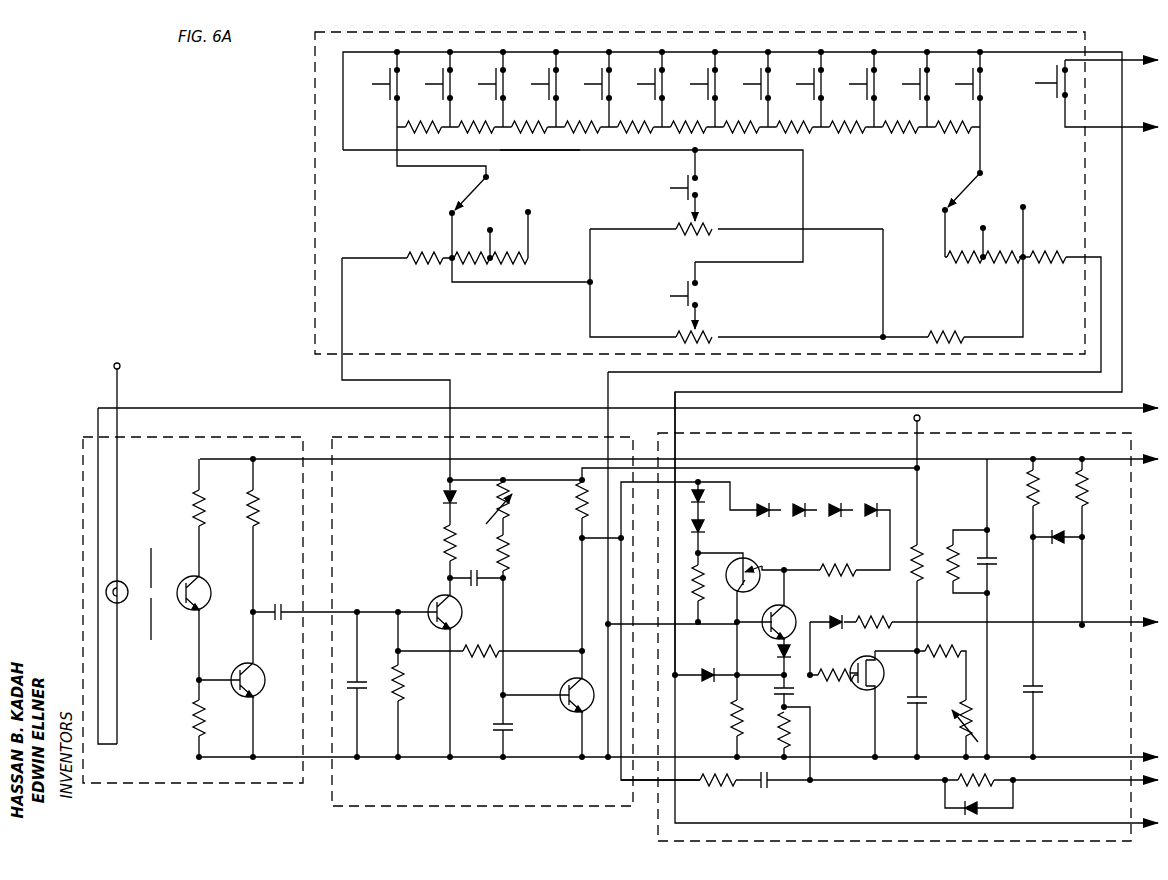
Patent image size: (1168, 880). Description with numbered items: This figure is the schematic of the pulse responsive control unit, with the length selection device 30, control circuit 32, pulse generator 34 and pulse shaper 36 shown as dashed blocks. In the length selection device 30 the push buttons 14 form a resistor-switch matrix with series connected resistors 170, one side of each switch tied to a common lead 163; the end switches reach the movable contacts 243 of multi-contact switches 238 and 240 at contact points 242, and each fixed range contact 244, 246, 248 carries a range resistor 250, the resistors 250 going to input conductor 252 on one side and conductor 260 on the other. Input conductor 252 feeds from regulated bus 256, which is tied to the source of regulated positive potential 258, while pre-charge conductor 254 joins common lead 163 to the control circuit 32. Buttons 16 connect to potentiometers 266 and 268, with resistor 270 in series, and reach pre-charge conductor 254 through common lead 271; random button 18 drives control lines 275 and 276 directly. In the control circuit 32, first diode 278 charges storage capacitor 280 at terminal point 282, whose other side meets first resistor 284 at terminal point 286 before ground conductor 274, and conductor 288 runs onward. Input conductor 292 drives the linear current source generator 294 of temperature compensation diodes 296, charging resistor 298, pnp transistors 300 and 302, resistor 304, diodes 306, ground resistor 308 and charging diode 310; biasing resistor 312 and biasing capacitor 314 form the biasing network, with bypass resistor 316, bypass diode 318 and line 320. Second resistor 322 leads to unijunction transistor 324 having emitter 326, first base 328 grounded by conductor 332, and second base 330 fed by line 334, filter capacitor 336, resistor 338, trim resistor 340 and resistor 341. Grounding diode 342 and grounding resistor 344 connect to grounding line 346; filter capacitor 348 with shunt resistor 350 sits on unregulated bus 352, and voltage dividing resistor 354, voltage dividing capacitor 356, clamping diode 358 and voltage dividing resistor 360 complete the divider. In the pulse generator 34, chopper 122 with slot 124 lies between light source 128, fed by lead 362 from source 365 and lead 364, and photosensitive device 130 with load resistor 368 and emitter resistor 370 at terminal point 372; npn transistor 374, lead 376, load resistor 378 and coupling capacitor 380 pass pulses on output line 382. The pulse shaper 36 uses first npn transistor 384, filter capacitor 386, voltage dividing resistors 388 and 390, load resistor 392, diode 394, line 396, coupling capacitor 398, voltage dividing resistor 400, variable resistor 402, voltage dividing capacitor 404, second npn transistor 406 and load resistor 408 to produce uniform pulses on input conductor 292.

The push buttons 14 is at (668, 48).
The buttons 16 is at (686, 186).
The random length switch or push button 18 is at (1075, 90).
The length selection device 30 is at (313, 186).
The pulse responsive control circuit 32 is at (655, 830).
The pulse generator 34 is at (80, 463).
The pulse shaper 36 is at (378, 808).
The chopper 122 is at (152, 564).
The slot 124 is at (156, 604).
The light source 128 is at (123, 600).
The photosensitive device 130 is at (204, 586).
The common lead 163 is at (1044, 60).
The series connected resistors 170 is at (486, 130).
The multi-contact switch 238 is at (467, 303).
The multi-contact switch 240 is at (854, 249).
The contact point 242 is at (486, 177).
The movable contact 243 is at (468, 193).
The fixed range contact 244 is at (452, 213).
The fixed range contact 246 is at (505, 210).
The fixed range contact 248 is at (528, 211).
The range resistor 250 is at (420, 252).
The input conductor 252 is at (342, 314).
The pre-charge conductor 254 is at (1122, 256).
The regulated bus 256 is at (478, 478).
The source of regulated positive potential 258 is at (914, 418).
The conductor 260 is at (600, 375).
The potentiometer 266 is at (696, 231).
The potentiometer 268 is at (710, 332).
The resistor 270 is at (949, 336).
The common lead 271 is at (537, 150).
The ground conductor 274 is at (550, 758).
The control line 275 is at (1138, 54).
The control line 276 is at (1072, 138).
The first diode 278 is at (710, 678).
The storage capacitor 280 is at (800, 690).
The terminal point 282 is at (780, 684).
The first resistor 284 is at (782, 729).
The terminal point 286 is at (784, 707).
The conductor 288 is at (1098, 822).
The input conductor 292 is at (648, 482).
The linear current source generator 294 is at (756, 546).
The temperature compensation diodes 296 is at (868, 506).
The charging resistor 298 is at (826, 566).
The pnp transistor 300 is at (758, 558).
The pnp transistor 302 is at (788, 614).
The resistor 304 is at (700, 620).
The diodes 306 is at (706, 517).
The ground resistor 308 is at (734, 716).
The charging diode 310 is at (780, 656).
The biasing resistor 312 is at (718, 786).
The biasing capacitor 314 is at (768, 785).
The bypass resistor 316 is at (951, 780).
The bypass diode 318 is at (950, 810).
The line 320 is at (1075, 784).
The second resistor 322 is at (811, 666).
The unijunction transistor 324 is at (915, 684).
The emitter 326 is at (836, 676).
The first base 328 is at (866, 692).
The second base 330 is at (876, 660).
The conductor 332 is at (875, 710).
The line 334 is at (917, 607).
The filter capacitor 336 is at (920, 700).
The resistor 338 is at (936, 643).
The trim resistor 340 is at (960, 728).
The resistor 341 is at (914, 572).
The grounding diode 342 is at (844, 616).
The grounding resistor 344 is at (862, 628).
The grounding line 346 is at (1104, 630).
The filter capacitor 348 is at (996, 565).
The shunt resistor 350 is at (948, 556).
The unregulated bus 352 is at (1100, 459).
The voltage dividing resistor 354 is at (1030, 510).
The voltage dividing capacitor 356 is at (1046, 691).
The clamping diode 358 is at (1060, 544).
The voltage dividing resistor 360 is at (1082, 500).
The lead 362 is at (118, 460).
The unregulated source lead 364 is at (262, 410).
The source of unregulated positive potential 365 is at (114, 366).
The load resistor 368 is at (194, 510).
The emitter resistor 370 is at (196, 716).
The terminal point 372 is at (199, 680).
The npn transistor 374 is at (266, 674).
The lead 376 is at (253, 725).
The load resistor 378 is at (256, 508).
The coupling capacitor 380 is at (298, 586).
The output line 382 is at (332, 614).
The first npn transistor 384 is at (458, 617).
The filter capacitor 386 is at (364, 688).
The voltage dividing resistor 388 is at (398, 700).
The voltage dividing resistor 390 is at (485, 655).
The load resistor 392 is at (444, 545).
The diode 394 is at (440, 500).
The line 396 is at (450, 734).
The coupling capacitor 398 is at (474, 570).
The voltage dividing resistor 400 is at (505, 552).
The variable resistor 402 is at (508, 515).
The voltage dividing capacitor 404 is at (510, 730).
The second npn transistor 406 is at (572, 684).
The load resistor 408 is at (580, 506).